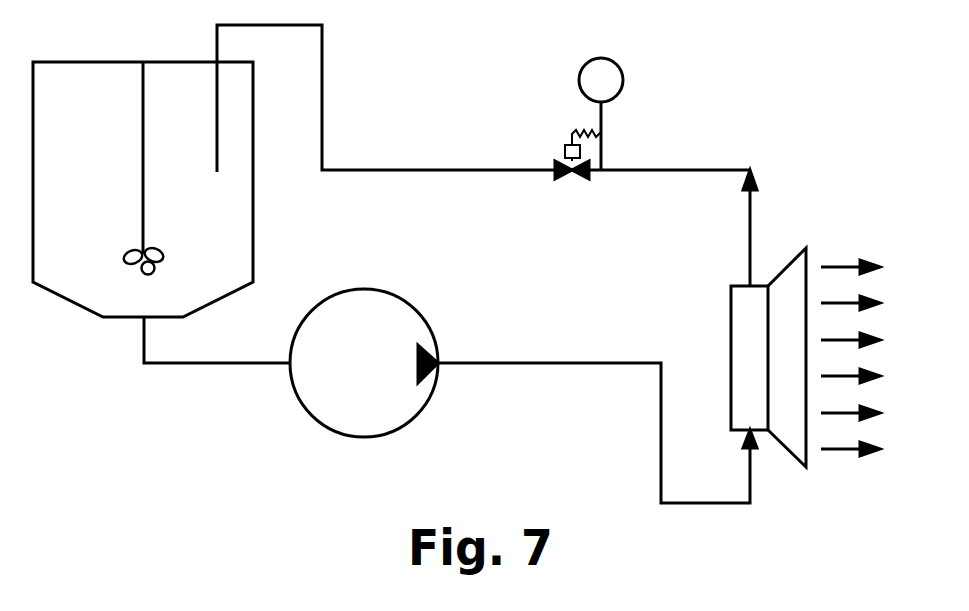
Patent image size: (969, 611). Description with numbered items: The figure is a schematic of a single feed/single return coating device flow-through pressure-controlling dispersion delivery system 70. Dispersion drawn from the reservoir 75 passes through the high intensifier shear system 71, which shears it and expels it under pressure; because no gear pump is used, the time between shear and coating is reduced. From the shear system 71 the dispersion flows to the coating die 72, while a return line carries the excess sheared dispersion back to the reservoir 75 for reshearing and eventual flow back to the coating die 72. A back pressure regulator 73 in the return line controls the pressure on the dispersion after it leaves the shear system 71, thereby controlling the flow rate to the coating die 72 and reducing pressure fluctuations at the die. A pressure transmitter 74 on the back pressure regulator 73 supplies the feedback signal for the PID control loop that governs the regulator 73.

The pressure-controlling dispersion delivery system 70 is at (180, 420).
The high intensifier shear system 71 is at (305, 411).
The coating die 72 is at (785, 452).
The back pressure regulator 73 is at (601, 156).
The pressure transmitter 74 is at (622, 74).
The reservoir 75 is at (253, 245).